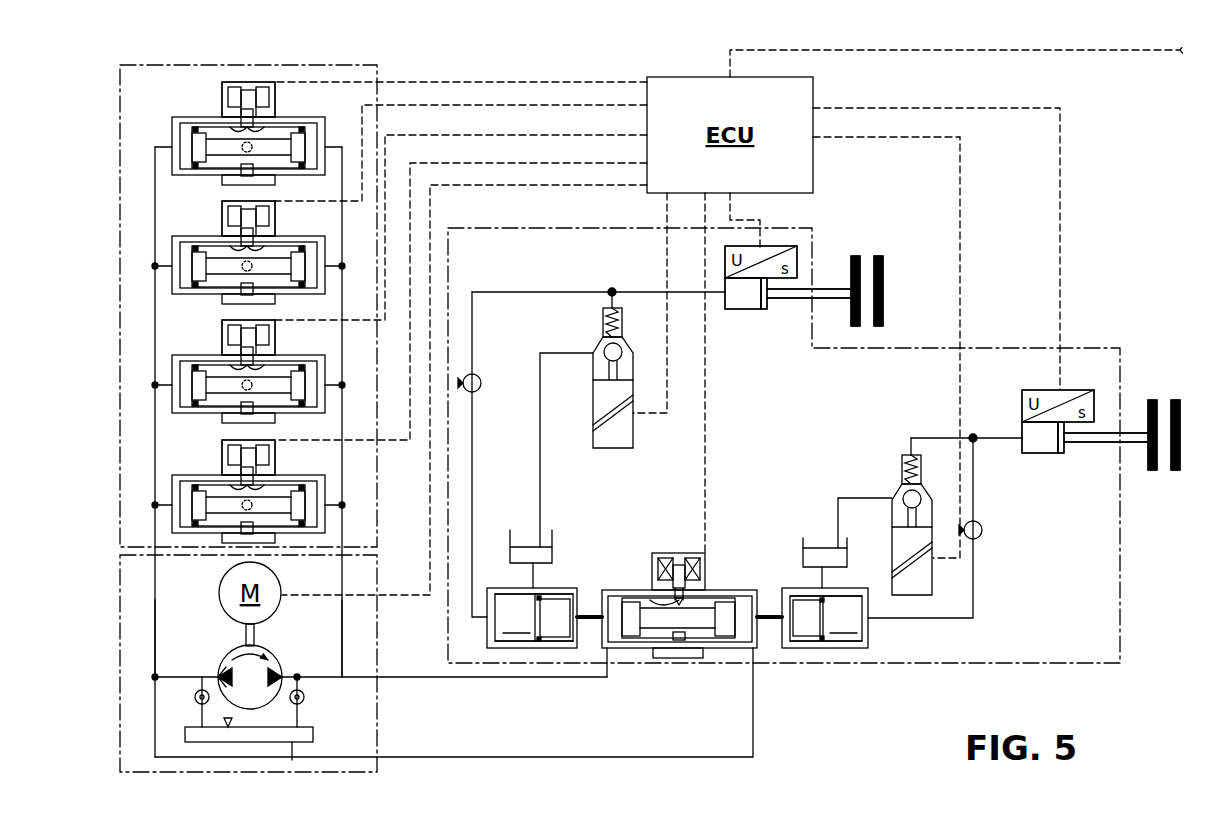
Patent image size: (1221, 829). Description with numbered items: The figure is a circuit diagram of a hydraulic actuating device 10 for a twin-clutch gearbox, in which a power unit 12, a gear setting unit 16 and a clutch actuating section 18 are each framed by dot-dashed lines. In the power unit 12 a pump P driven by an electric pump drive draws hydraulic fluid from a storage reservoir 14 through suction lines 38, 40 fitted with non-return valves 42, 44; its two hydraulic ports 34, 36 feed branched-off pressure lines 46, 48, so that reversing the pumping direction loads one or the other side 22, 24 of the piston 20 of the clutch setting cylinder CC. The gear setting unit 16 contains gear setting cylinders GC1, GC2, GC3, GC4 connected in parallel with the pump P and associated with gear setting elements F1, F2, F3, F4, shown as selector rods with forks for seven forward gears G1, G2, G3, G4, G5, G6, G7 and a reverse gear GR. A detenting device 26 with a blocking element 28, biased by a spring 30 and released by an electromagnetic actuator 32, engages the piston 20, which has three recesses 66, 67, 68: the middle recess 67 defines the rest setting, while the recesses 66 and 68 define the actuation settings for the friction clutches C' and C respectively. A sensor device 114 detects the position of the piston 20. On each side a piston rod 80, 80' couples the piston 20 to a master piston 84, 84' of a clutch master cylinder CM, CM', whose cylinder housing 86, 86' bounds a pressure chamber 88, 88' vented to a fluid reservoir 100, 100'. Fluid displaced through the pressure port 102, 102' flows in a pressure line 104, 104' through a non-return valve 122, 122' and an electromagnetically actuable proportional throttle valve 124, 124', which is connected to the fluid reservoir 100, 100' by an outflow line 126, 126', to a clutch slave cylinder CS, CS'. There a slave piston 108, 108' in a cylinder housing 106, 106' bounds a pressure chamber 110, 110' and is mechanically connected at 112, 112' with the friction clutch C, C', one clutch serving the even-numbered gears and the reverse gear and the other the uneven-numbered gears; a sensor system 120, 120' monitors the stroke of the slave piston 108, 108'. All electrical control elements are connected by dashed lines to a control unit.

The hydraulic actuating device 10 is at (1147, 166).
The power unit 12 is at (379, 710).
The storage reservoir 14 is at (314, 740).
The gear setting unit 16 is at (284, 65).
The clutch actuating section 18 is at (996, 346).
The piston 20 is at (650, 626).
The side of piston 22 is at (618, 650).
The side of piston 24 is at (742, 640).
The detenting device 26 is at (655, 548).
The blocking element 28 is at (656, 582).
The spring 30 is at (668, 572).
The actuator 32 is at (703, 553).
The hydraulic port 34 is at (200, 676).
The hydraulic port 36 is at (288, 676).
The suction line 38 is at (186, 742).
The suction line 40 is at (292, 742).
The non-return valve 42 is at (194, 697).
The non-return valve 44 is at (328, 690).
The pressure line 46 is at (155, 676).
The pressure line 48 is at (312, 676).
The recess 66 is at (722, 612).
The recess 67 is at (679, 602).
The recess 68 is at (662, 642).
The piston rod 80 is at (768, 588).
The piston rod 80' is at (575, 666).
The master piston 84 is at (816, 654).
The master piston 84' is at (537, 656).
The cylinder housing 86 is at (832, 676).
The cylinder housing 86' is at (518, 678).
The pressure chamber 88 is at (844, 620).
The pressure chamber 88' is at (518, 620).
The fluid reservoir 100 is at (815, 545).
The fluid reservoir 100' is at (517, 540).
The pressure port 102 is at (844, 582).
The pressure port 102' is at (519, 585).
The pressure line 104 is at (949, 528).
The pressure line 104' is at (502, 454).
The cylinder housing 106 is at (966, 417).
The cylinder housing 106' is at (598, 273).
The slave piston 108 is at (1096, 460).
The slave piston 108' is at (800, 323).
The pressure chamber 110 is at (1025, 408).
The pressure chamber 110' is at (734, 332).
The connection to friction clutch 112 is at (1124, 470).
The connection to friction clutch 112' is at (822, 265).
The sensor device 114 is at (690, 658).
The sensor system 120 is at (1073, 370).
The sensor system 120' is at (781, 242).
The non-return valve 122 is at (1002, 541).
The non-return valve 122' is at (500, 365).
The proportional throttle valve 124 is at (892, 516).
The proportional throttle valve 124' is at (605, 396).
The outflow line 126 is at (845, 509).
The outflow line 126' is at (570, 450).
The friction clutch C is at (1164, 399).
The friction clutch C' is at (873, 263).
The clutch slave cylinder CS is at (1101, 454).
The clutch slave cylinder CS' is at (804, 303).
The clutch master cylinder CM is at (859, 623).
The clutch master cylinder CM' is at (556, 593).
The clutch setting cylinder CC is at (726, 592).
The pump P is at (222, 655).
The gear setting element F1 is at (242, 152).
The gear setting element F2 is at (242, 271).
The gear setting element F3 is at (242, 390).
The gear setting element F4 is at (242, 510).
The forward gear G1 is at (233, 125).
The forward gear G2 is at (234, 246).
The forward gear G3 is at (293, 106).
The forward gear G4 is at (234, 365).
The forward gear G5 is at (299, 465).
The forward gear G6 is at (299, 345).
The forward gear G7 is at (234, 485).
The reverse gear GR is at (299, 228).
The gear setting cylinder GC1 is at (170, 141).
The gear setting cylinder GC2 is at (170, 262).
The gear setting cylinder GC3 is at (170, 385).
The gear setting cylinder GC4 is at (170, 505).